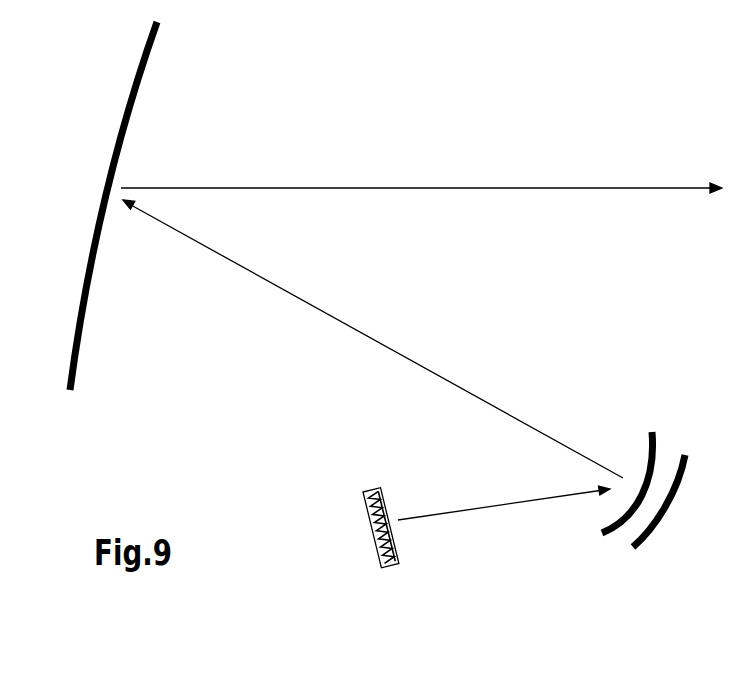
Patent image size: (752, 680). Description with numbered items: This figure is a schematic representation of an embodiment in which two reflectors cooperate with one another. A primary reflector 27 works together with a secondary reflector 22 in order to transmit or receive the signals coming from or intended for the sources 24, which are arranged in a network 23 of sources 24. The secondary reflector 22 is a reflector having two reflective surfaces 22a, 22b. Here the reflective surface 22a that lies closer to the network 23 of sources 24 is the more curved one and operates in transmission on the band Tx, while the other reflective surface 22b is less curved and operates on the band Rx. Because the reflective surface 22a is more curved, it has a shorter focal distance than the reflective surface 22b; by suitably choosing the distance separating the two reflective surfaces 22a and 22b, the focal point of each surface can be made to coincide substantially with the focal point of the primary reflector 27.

The secondary reflector 22 is at (671, 518).
The reflective surface 22a is at (621, 468).
The reflective surface 22b is at (692, 501).
The network of sources 23 is at (351, 528).
The sources 24 is at (359, 527).
The primary reflector 27 is at (88, 206).